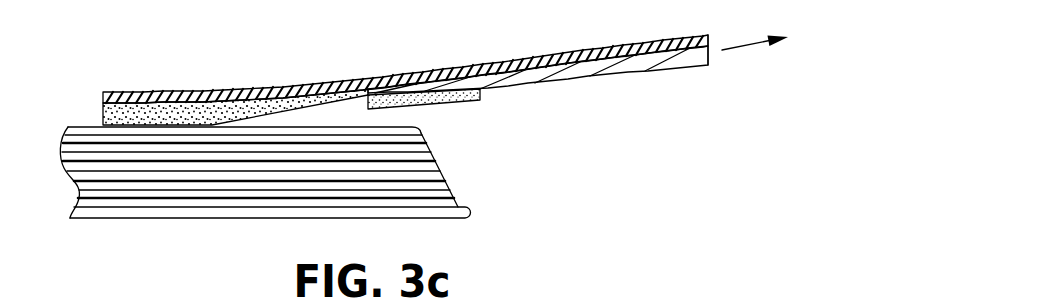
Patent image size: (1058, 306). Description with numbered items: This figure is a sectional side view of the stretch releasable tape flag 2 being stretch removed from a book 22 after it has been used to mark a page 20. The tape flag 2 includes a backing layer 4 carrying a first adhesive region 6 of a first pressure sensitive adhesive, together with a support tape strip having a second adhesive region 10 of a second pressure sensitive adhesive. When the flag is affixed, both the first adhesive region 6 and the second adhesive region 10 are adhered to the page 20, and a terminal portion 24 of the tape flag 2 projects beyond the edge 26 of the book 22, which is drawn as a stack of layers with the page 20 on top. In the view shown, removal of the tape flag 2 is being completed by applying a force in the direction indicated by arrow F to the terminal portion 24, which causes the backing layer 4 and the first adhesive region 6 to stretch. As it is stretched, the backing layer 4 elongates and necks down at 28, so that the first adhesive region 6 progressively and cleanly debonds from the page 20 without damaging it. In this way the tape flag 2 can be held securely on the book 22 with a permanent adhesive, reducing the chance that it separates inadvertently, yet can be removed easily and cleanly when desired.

The stretch releasable tape flag 2 is at (303, 57).
The backing layer 4 is at (150, 90).
The first adhesive region 6 is at (100, 117).
The second adhesive region 10 is at (483, 93).
The page 20 is at (378, 130).
The book 22 is at (432, 218).
The terminal portion 24 is at (598, 47).
The edge 26 is at (421, 134).
The necked-down region 28 is at (263, 97).
The arrow F is at (745, 43).